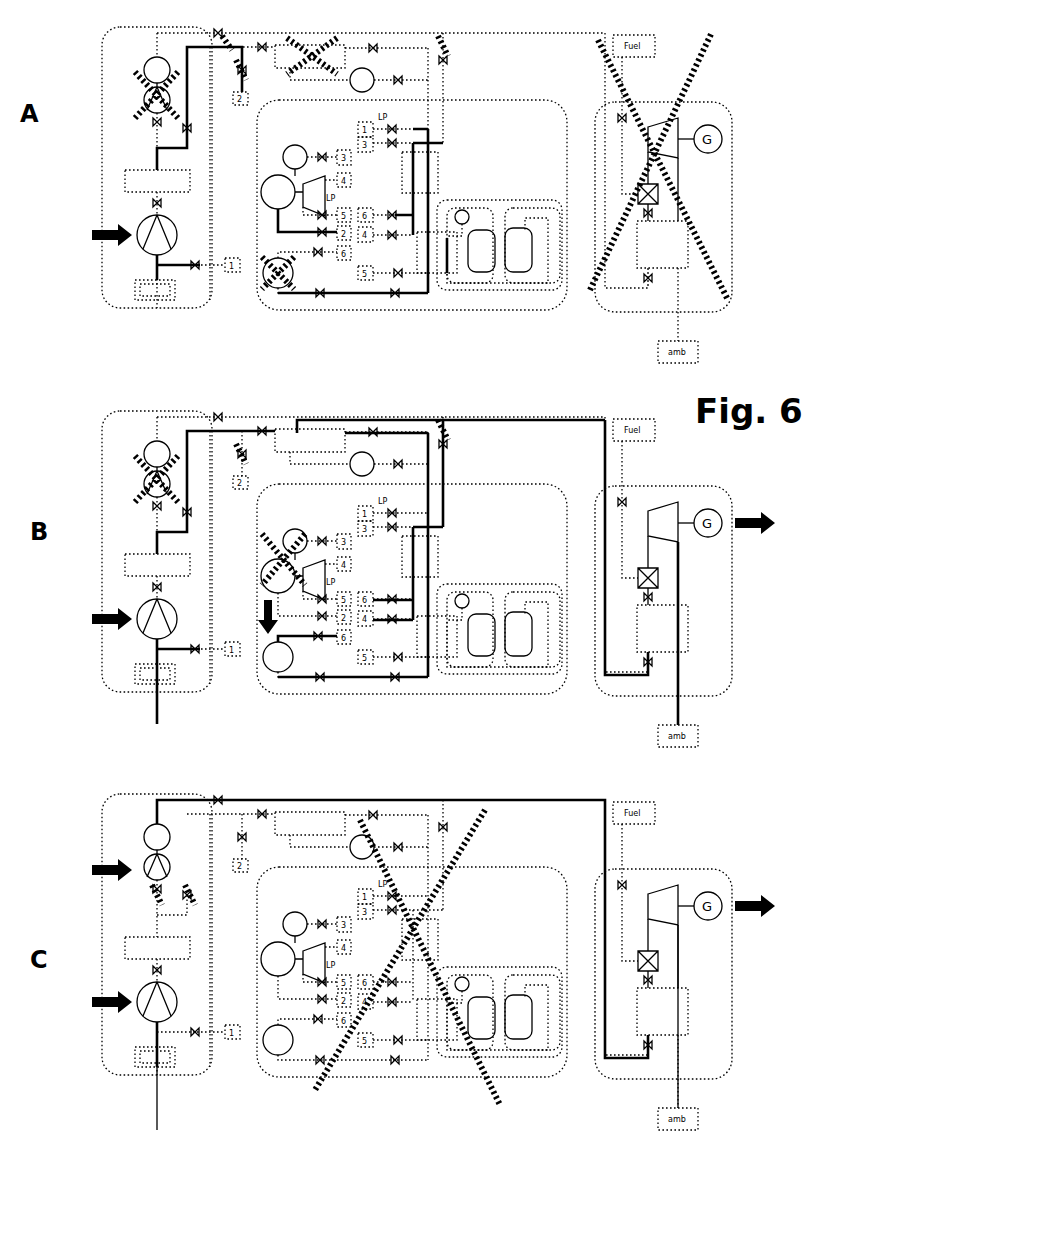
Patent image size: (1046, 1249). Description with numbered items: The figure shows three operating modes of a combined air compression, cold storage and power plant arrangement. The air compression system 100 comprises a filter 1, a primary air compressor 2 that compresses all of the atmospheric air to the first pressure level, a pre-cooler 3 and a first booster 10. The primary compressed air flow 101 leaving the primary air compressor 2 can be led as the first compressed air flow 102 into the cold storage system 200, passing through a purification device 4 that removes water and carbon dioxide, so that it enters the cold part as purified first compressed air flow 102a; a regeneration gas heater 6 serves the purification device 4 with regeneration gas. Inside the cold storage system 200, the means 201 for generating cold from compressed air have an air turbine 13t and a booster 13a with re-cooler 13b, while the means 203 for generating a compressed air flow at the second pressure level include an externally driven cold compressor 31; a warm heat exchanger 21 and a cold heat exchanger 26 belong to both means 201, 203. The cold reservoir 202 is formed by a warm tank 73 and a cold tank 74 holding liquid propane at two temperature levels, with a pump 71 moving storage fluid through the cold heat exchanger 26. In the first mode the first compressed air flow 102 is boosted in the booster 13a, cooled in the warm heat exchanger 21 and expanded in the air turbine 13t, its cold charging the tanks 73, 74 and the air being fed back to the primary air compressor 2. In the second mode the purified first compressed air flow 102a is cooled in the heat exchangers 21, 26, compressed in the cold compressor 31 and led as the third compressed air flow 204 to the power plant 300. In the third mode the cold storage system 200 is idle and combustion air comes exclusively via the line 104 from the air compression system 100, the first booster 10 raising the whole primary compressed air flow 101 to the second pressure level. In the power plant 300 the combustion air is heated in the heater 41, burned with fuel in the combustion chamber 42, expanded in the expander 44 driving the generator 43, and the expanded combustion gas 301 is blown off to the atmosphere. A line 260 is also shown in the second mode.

The filter 1 is at (169, 673).
The primary air compressor 2 is at (170, 618).
The pre-cooler 3 is at (167, 564).
The purification device 4 is at (310, 449).
The regeneration gas heater 6 is at (355, 466).
The first booster 10 is at (148, 468).
The booster 13a is at (274, 561).
The re-cooler 13b is at (291, 530).
The air turbine 13t is at (278, 216).
The warm heat exchanger 21 is at (433, 556).
The cold heat exchanger 26 is at (425, 636).
The cold compressor 31 is at (291, 656).
The heater 41 is at (662, 628).
The combustion chamber 42 is at (655, 567).
The generator 43 is at (700, 533).
The expander 44 is at (663, 521).
The pump 71 is at (462, 977).
The warm tank 73 is at (481, 634).
The cold tank 74 is at (518, 633).
The air compression system 100 is at (157, 694).
The primary compressed air flow 101 is at (157, 908).
The first compressed air flow 102 is at (243, 428).
The purified first compressed air flow 102a is at (392, 420).
The line 104 is at (555, 801).
The cold storage system 200 is at (382, 1079).
The means for generating cold from compressed air 201 is at (325, 537).
The cold reservoir 202 is at (500, 676).
The means for generating a compressed air flow at the second pressure level 203 is at (315, 617).
The third compressed air flow 204 is at (601, 440).
The heat transfer line 260 is at (411, 480).
The power plant 300 is at (720, 486).
The combustion gas 301 is at (678, 698).